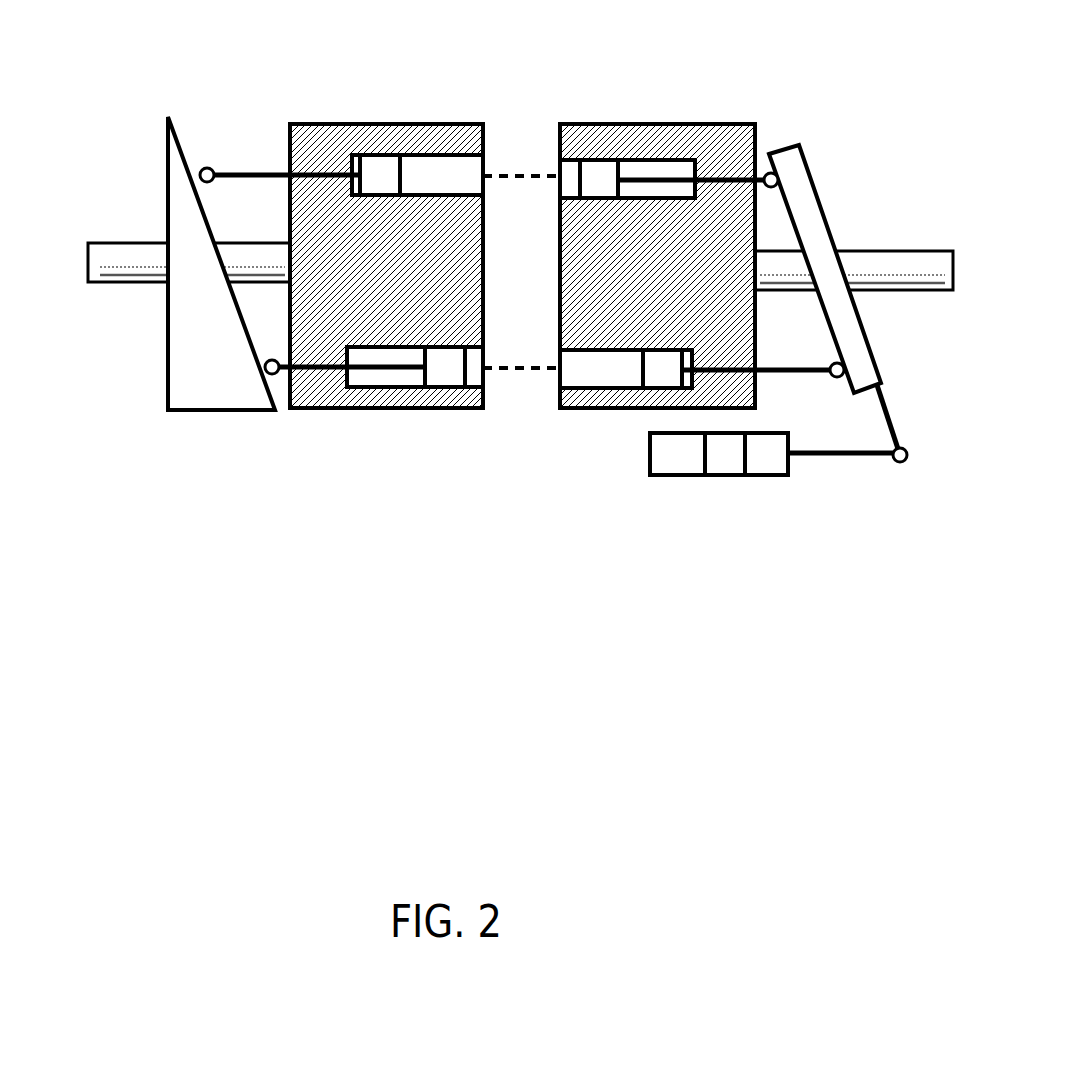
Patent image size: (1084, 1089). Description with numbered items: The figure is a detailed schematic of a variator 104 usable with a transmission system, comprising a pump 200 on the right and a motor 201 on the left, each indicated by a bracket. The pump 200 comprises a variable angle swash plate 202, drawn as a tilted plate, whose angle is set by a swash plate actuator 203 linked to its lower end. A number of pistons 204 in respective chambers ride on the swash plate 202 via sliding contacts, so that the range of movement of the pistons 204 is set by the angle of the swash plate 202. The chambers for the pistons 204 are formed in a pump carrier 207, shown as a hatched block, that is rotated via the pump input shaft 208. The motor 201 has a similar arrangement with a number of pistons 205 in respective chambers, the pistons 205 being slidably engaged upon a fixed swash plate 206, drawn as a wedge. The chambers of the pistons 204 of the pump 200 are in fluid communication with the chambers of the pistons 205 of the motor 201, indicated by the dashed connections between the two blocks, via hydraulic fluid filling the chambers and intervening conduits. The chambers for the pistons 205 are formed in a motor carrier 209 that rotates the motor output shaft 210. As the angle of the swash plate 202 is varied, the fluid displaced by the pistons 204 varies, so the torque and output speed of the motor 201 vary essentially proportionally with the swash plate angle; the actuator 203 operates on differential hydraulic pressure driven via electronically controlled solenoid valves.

The variator 104 is at (607, 625).
The pump 200 is at (716, 286).
The motor 201 is at (330, 259).
The variable angle swash plate 202 is at (852, 327).
The swash plate actuator 203 is at (735, 487).
The pistons 204 is at (657, 340).
The pistons 205 is at (437, 333).
The fixed swash plate 206 is at (230, 400).
The pump carrier 207 is at (590, 412).
The pump input shaft 208 is at (918, 267).
The motor carrier 209 is at (437, 412).
The motor output shaft 210 is at (103, 252).